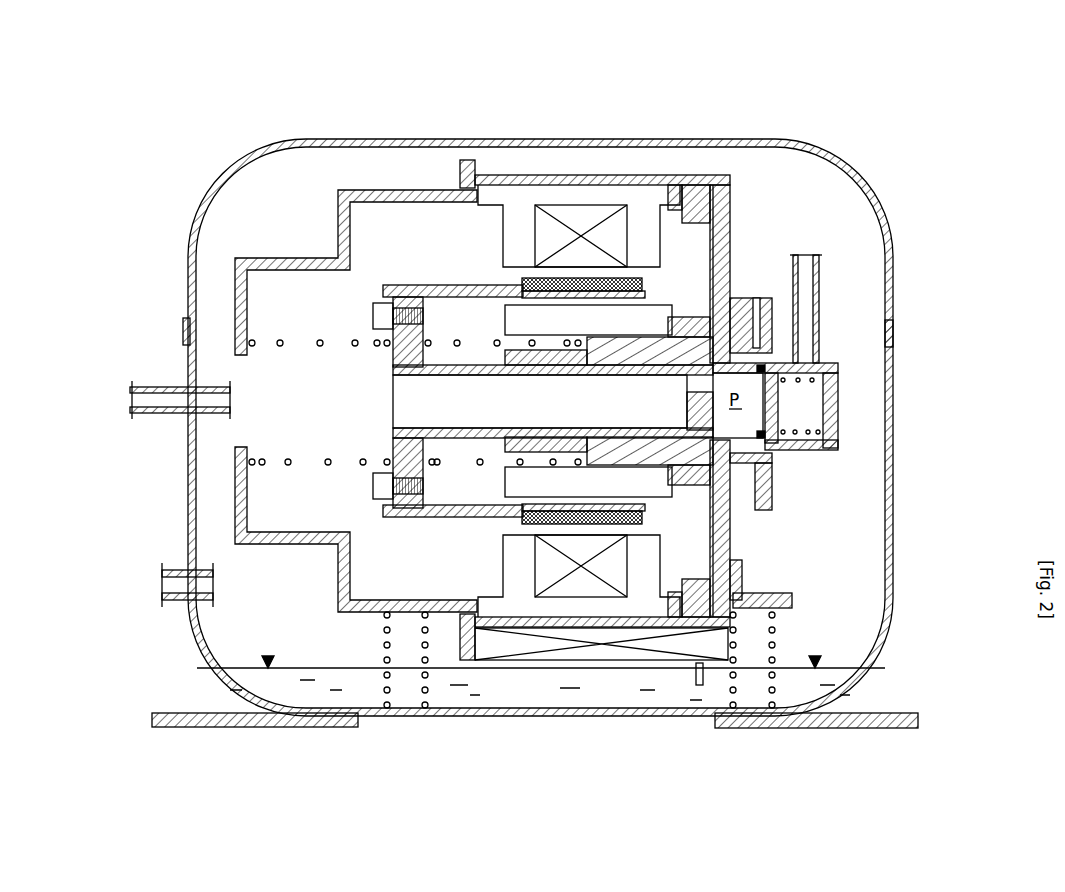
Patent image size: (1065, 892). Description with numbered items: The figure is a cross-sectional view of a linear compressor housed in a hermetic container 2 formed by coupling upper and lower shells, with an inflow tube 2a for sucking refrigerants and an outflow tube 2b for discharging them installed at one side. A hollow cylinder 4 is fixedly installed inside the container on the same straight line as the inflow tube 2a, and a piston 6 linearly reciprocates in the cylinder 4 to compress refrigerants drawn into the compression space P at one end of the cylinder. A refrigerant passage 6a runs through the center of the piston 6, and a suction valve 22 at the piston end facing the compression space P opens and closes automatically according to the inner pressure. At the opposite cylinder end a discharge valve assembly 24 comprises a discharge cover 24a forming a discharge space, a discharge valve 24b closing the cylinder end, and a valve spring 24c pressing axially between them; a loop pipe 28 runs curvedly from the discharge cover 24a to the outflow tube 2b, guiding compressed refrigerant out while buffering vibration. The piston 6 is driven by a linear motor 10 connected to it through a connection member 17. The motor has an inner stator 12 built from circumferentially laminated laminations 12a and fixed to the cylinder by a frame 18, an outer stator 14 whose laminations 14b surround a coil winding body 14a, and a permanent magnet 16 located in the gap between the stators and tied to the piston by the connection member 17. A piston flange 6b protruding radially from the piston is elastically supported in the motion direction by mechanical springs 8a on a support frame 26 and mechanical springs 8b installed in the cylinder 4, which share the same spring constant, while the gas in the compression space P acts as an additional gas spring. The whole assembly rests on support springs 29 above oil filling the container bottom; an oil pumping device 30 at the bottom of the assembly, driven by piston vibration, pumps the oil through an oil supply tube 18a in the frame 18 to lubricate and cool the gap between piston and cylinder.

The hermetic container 2 is at (290, 145).
The inflow tube 2a is at (152, 387).
The outflow tube 2b is at (172, 570).
The cylinder 4 is at (727, 200).
The piston 6 is at (433, 335).
The refrigerant passage 6a is at (475, 395).
The piston flange 6b is at (405, 300).
The mechanical springs 8a is at (287, 465).
The mechanical springs 8b is at (480, 465).
The linear motor 10 is at (667, 103).
The inner stator 12 is at (522, 285).
The laminations 12a is at (523, 480).
The outer stator 14 is at (584, 205).
The coil winding body 14a is at (577, 585).
The laminations 14b is at (630, 607).
The permanent magnet 16 is at (632, 278).
The connection member 17 is at (380, 303).
The frame 18 is at (750, 577).
The oil supply tube 18a is at (740, 540).
The suction valve 22 is at (750, 297).
The discharge valve assembly 24 is at (865, 450).
The discharge cover 24a is at (830, 440).
The discharge valve 24b is at (800, 450).
The valve spring 24c is at (820, 455).
The support frame 26 is at (245, 462).
The loop pipe 28 is at (820, 268).
The support springs 29 is at (387, 708).
The oil pumping device 30 is at (660, 660).
The discharge chamber R is at (840, 370).